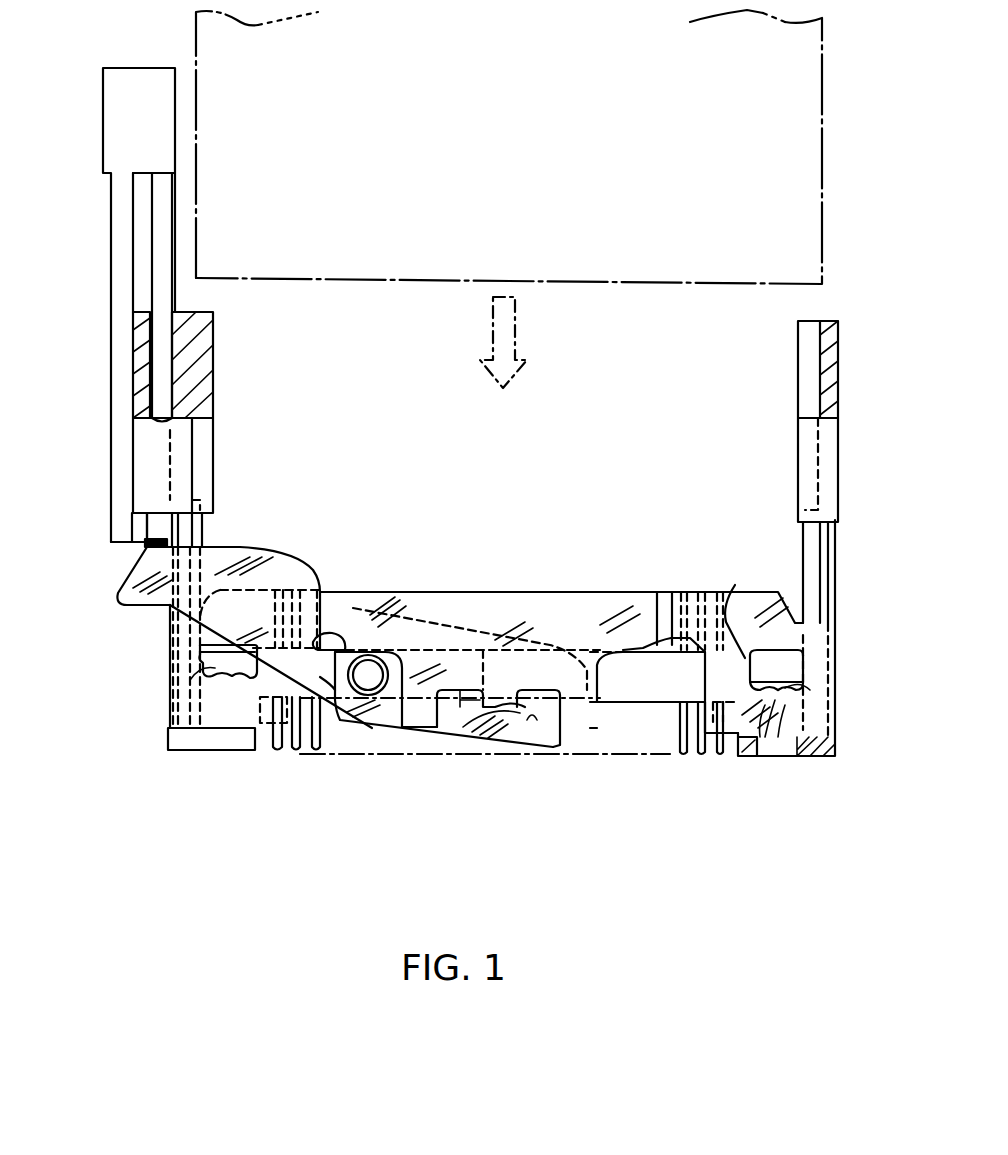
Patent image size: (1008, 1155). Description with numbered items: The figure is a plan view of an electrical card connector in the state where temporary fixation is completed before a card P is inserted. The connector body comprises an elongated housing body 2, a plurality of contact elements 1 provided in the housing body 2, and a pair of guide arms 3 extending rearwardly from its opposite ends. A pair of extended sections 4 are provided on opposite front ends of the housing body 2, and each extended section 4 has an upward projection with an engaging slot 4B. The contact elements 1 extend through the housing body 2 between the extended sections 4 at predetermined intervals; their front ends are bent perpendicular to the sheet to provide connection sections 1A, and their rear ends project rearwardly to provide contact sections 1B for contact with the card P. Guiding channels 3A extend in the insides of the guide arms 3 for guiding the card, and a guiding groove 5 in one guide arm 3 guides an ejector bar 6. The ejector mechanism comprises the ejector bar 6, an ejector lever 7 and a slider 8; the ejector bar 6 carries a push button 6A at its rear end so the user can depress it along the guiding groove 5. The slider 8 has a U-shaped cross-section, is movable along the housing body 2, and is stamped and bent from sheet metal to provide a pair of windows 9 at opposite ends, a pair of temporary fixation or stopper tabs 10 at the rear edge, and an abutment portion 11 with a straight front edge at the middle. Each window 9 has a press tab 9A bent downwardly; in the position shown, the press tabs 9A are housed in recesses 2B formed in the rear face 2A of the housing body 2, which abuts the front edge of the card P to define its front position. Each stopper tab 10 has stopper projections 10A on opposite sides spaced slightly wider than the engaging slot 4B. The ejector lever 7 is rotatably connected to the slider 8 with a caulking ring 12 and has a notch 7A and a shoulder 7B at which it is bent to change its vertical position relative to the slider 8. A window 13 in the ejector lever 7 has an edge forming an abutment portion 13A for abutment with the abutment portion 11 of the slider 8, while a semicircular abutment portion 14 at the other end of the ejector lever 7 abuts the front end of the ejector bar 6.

The card P is at (822, 167).
The contact elements 1 is at (685, 735).
The connection sections 1A is at (690, 750).
The contact sections 1B is at (735, 585).
The housing body 2 is at (630, 690).
The rear face 2A is at (640, 650).
The recesses 2B is at (780, 760).
The guide arms 3 is at (205, 462).
The guiding channels 3A is at (200, 535).
The extended sections 4 is at (182, 750).
The engaging slot 4B is at (762, 762).
The guiding groove 5 is at (173, 350).
The ejector bar 6 is at (158, 255).
The push button 6A is at (120, 124).
The ejector lever 7 is at (275, 660).
The notch 7A is at (343, 642).
The shoulder 7B is at (330, 700).
The slider 8 is at (590, 605).
The windows 9 is at (197, 650).
The press tab 9A is at (193, 683).
The stopper tabs 10 is at (770, 760).
The stopper projections 10A is at (730, 760).
The abutment portion 11 is at (505, 690).
The caulking ring 12 is at (375, 700).
The window 13 is at (535, 715).
The abutment portion 13A is at (457, 722).
The semicircular abutment portion 14 is at (148, 545).